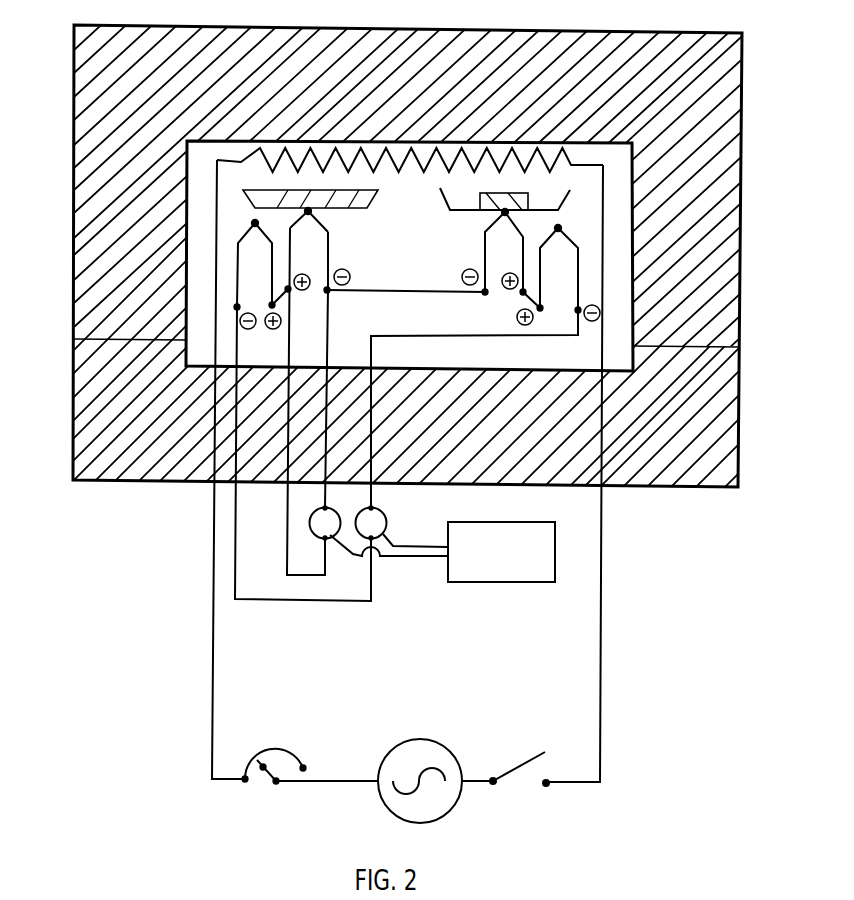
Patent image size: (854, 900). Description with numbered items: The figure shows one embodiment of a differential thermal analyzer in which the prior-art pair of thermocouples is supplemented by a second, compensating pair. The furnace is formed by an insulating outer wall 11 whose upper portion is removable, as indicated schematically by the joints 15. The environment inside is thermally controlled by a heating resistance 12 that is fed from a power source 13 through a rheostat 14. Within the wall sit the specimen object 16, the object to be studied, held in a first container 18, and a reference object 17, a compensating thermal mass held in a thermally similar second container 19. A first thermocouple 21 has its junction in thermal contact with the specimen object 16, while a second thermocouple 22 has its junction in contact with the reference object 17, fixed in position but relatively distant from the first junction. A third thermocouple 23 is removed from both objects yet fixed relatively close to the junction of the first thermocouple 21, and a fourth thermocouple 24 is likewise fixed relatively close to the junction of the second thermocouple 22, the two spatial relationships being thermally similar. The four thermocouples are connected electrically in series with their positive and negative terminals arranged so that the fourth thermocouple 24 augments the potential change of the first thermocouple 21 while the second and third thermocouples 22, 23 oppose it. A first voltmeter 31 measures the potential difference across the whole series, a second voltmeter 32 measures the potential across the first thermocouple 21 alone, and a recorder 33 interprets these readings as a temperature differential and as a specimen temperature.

The insulating outer wall 11 is at (732, 268).
The heating resistance 12 is at (438, 160).
The power source 13 is at (442, 747).
The rheostat 14 is at (282, 750).
The joints 15 is at (97, 338).
The specimen object 16 is at (300, 190).
The reference object 17 is at (512, 193).
The first container 18 is at (373, 197).
The second container 19 is at (450, 210).
The first thermocouple 21 is at (312, 243).
The second thermocouple 22 is at (500, 252).
The third thermocouple 23 is at (252, 248).
The fourth thermocouple 24 is at (560, 247).
The first voltmeter 31 is at (388, 522).
The second voltmeter 32 is at (326, 510).
The recorder 33 is at (502, 582).